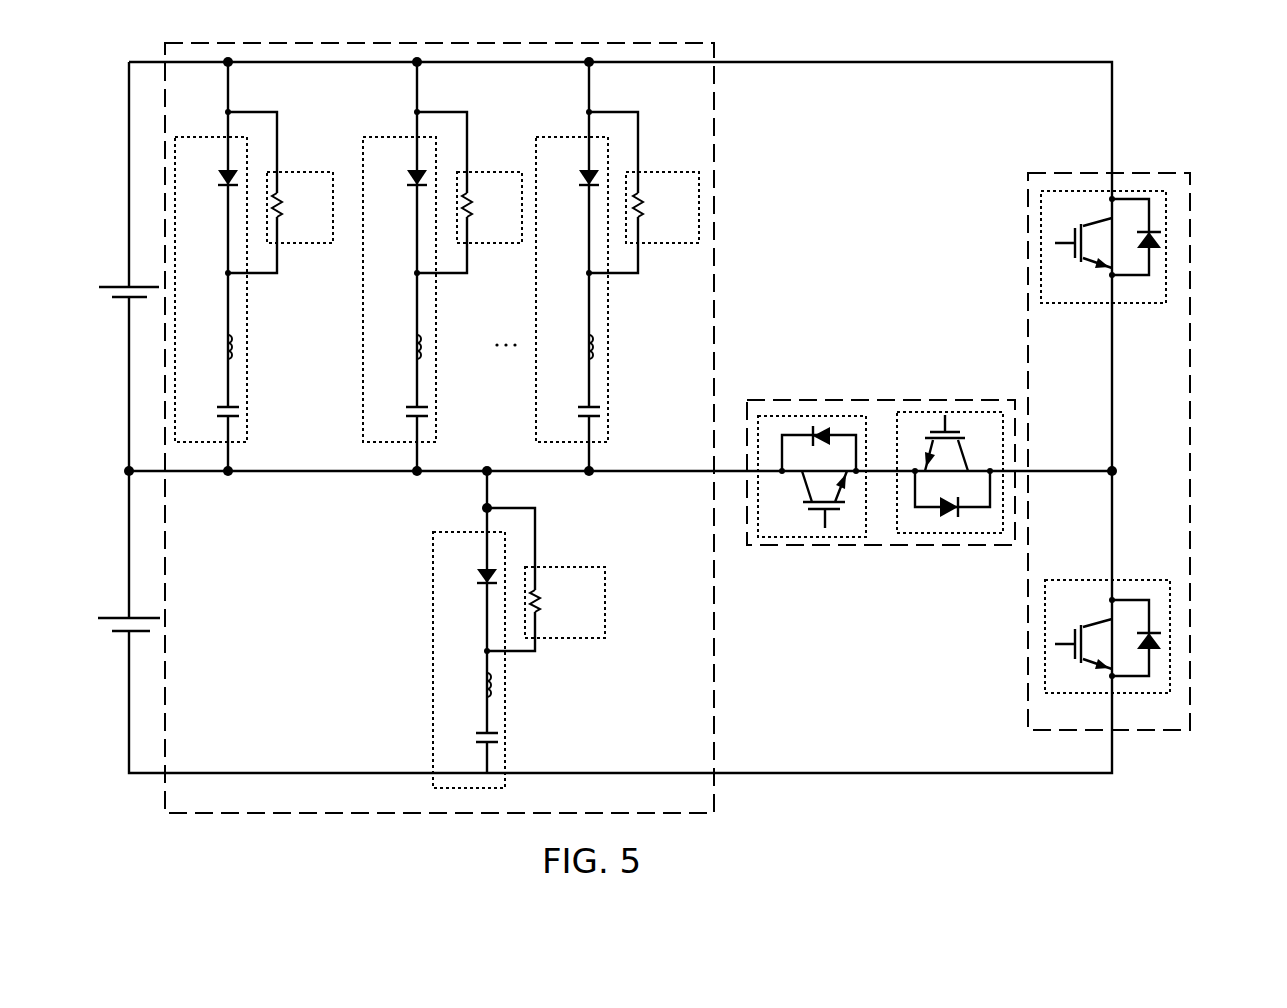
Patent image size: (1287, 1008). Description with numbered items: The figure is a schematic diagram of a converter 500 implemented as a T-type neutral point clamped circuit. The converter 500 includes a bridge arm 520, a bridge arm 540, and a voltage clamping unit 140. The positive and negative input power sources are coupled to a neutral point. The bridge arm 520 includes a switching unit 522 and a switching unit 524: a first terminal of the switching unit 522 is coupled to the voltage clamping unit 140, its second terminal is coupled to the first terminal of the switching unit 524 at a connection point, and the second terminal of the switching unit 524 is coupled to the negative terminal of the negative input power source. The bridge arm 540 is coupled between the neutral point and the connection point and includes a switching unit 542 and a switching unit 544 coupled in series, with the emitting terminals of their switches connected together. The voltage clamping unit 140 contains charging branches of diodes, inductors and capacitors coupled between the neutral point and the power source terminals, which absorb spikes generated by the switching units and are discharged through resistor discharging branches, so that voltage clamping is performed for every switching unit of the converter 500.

The converter 500 is at (1276, 198).
The voltage clamping unit 140 is at (715, 630).
The bridge arm 520 is at (1190, 323).
The switching unit 522 is at (1166, 270).
The switching unit 524 is at (1170, 657).
The bridge arm 540 is at (995, 545).
The switching unit 542 is at (807, 545).
The switching unit 544 is at (935, 537).